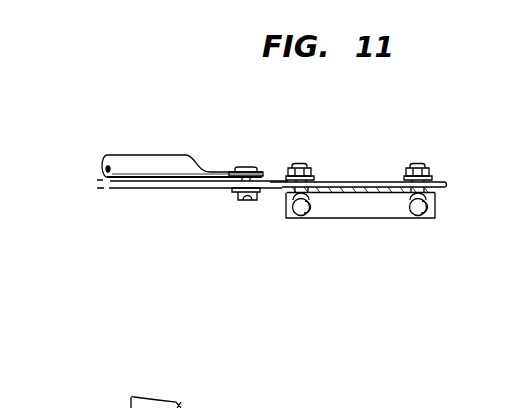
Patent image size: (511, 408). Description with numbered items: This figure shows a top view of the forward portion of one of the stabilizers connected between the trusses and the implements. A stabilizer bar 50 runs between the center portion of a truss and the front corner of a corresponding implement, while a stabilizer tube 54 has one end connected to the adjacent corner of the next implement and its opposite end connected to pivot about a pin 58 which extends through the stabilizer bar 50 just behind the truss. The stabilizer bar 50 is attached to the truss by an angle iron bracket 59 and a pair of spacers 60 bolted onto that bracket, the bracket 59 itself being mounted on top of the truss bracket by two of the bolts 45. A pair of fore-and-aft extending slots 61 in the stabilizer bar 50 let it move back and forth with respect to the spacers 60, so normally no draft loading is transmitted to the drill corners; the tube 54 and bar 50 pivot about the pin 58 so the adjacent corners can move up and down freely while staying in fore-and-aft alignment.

The bolts 45 is at (408, 208).
The stabilizer bar 50 is at (182, 189).
The stabilizer tube 54 is at (160, 163).
The pin 58 is at (248, 202).
The angle iron bracket 59 is at (435, 210).
The spacers 60 is at (287, 180).
The fore-and-aft extending slots 61 is at (277, 183).